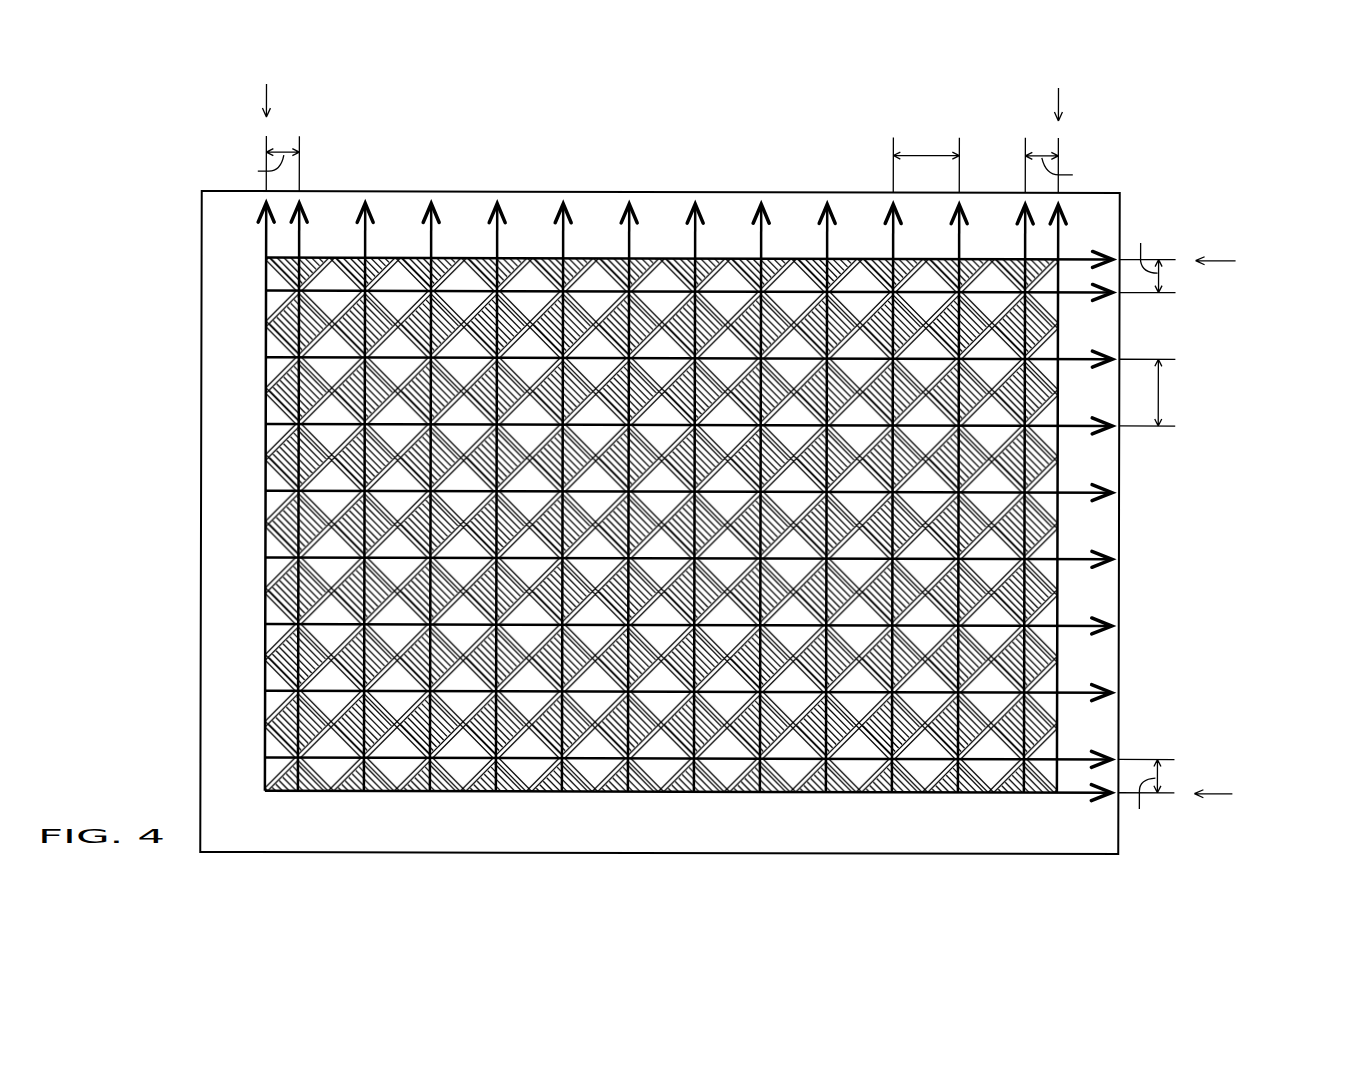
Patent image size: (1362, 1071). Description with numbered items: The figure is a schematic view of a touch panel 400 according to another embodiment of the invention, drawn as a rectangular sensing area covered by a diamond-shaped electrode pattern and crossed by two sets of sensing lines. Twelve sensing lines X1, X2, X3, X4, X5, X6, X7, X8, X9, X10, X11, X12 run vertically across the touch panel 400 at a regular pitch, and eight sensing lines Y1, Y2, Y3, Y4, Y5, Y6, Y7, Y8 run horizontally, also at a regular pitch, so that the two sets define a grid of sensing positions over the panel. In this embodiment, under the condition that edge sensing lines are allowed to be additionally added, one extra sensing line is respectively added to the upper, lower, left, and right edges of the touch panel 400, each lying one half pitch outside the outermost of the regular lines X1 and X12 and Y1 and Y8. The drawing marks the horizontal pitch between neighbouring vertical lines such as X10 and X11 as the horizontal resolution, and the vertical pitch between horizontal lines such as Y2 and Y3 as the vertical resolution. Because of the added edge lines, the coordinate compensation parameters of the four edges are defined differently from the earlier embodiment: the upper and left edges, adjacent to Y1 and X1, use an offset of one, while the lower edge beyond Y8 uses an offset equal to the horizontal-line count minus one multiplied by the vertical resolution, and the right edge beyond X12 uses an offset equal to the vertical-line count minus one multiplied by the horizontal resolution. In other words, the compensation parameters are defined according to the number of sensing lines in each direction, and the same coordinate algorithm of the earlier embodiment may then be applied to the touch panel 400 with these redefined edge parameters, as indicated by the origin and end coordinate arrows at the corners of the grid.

The touch panel 400 is at (743, 463).
The first-axis electrode X1 is at (304, 497).
The first-axis electrode X2 is at (370, 497).
The first-axis electrode X3 is at (436, 497).
The first-axis electrode X4 is at (502, 498).
The first-axis electrode X5 is at (568, 498).
The first-axis electrode X6 is at (634, 498).
The first-axis electrode X7 is at (700, 498).
The first-axis electrode X8 is at (766, 498).
The first-axis electrode X9 is at (832, 498).
The first-axis electrode X10 is at (901, 499).
The first-axis electrode X11 is at (967, 499).
The first-axis electrode X12 is at (1033, 499).
The second-axis electrode Y1 is at (689, 300).
The second-axis electrode Y2 is at (689, 366).
The second-axis electrode Y3 is at (689, 433).
The second-axis electrode Y4 is at (689, 500).
The second-axis electrode Y5 is at (688, 566).
The second-axis electrode Y6 is at (688, 633).
The second-axis electrode Y7 is at (688, 700).
The second-axis electrode Y8 is at (688, 767).